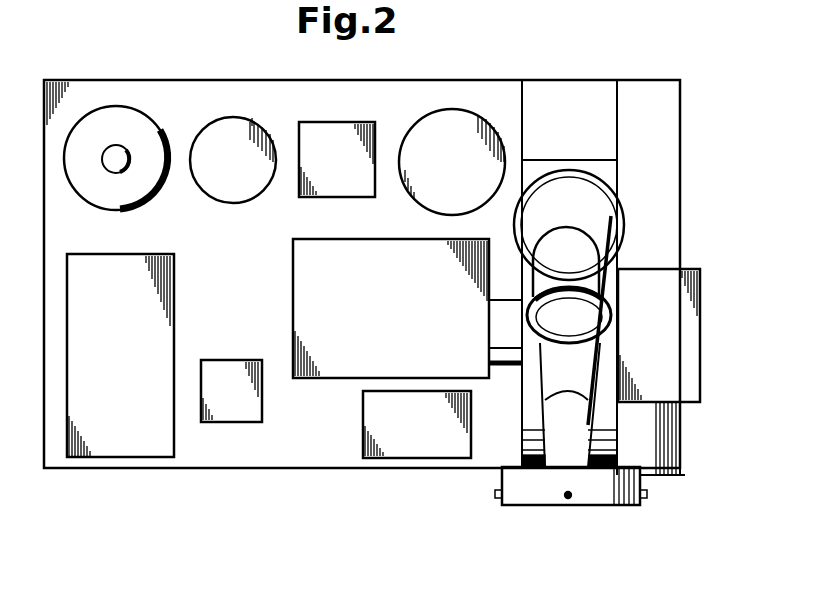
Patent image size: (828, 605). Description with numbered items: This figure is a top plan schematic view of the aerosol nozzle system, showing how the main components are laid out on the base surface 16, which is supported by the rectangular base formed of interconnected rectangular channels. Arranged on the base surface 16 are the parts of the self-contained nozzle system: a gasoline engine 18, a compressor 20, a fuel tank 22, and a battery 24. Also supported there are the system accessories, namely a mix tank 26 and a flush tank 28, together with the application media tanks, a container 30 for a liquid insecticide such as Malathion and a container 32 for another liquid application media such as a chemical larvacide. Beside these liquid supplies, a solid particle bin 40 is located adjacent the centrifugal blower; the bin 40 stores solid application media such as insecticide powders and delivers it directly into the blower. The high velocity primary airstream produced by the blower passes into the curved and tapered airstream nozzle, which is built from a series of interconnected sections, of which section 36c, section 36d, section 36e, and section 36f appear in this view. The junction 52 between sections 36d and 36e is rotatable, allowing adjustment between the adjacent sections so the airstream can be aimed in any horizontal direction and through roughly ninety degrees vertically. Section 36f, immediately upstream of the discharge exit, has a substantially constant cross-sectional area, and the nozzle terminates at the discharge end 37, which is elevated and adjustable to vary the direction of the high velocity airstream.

The base surface 16 is at (218, 313).
The gasoline engine 18 is at (384, 355).
The compressor 20 is at (434, 433).
The fuel tank 22 is at (137, 353).
The battery 24 is at (249, 405).
The mix tank 26 is at (464, 168).
The flush tank 28 is at (125, 139).
The container 30 is at (243, 166).
The container 32 is at (350, 167).
The airstream nozzle section 36c is at (547, 216).
The airstream nozzle section 36d is at (592, 272).
The airstream nozzle section 36e is at (545, 355).
The airstream nozzle section 36f is at (578, 428).
The discharge end 37 is at (587, 509).
The solid particle bin 40 is at (676, 352).
The junction 52 is at (614, 311).